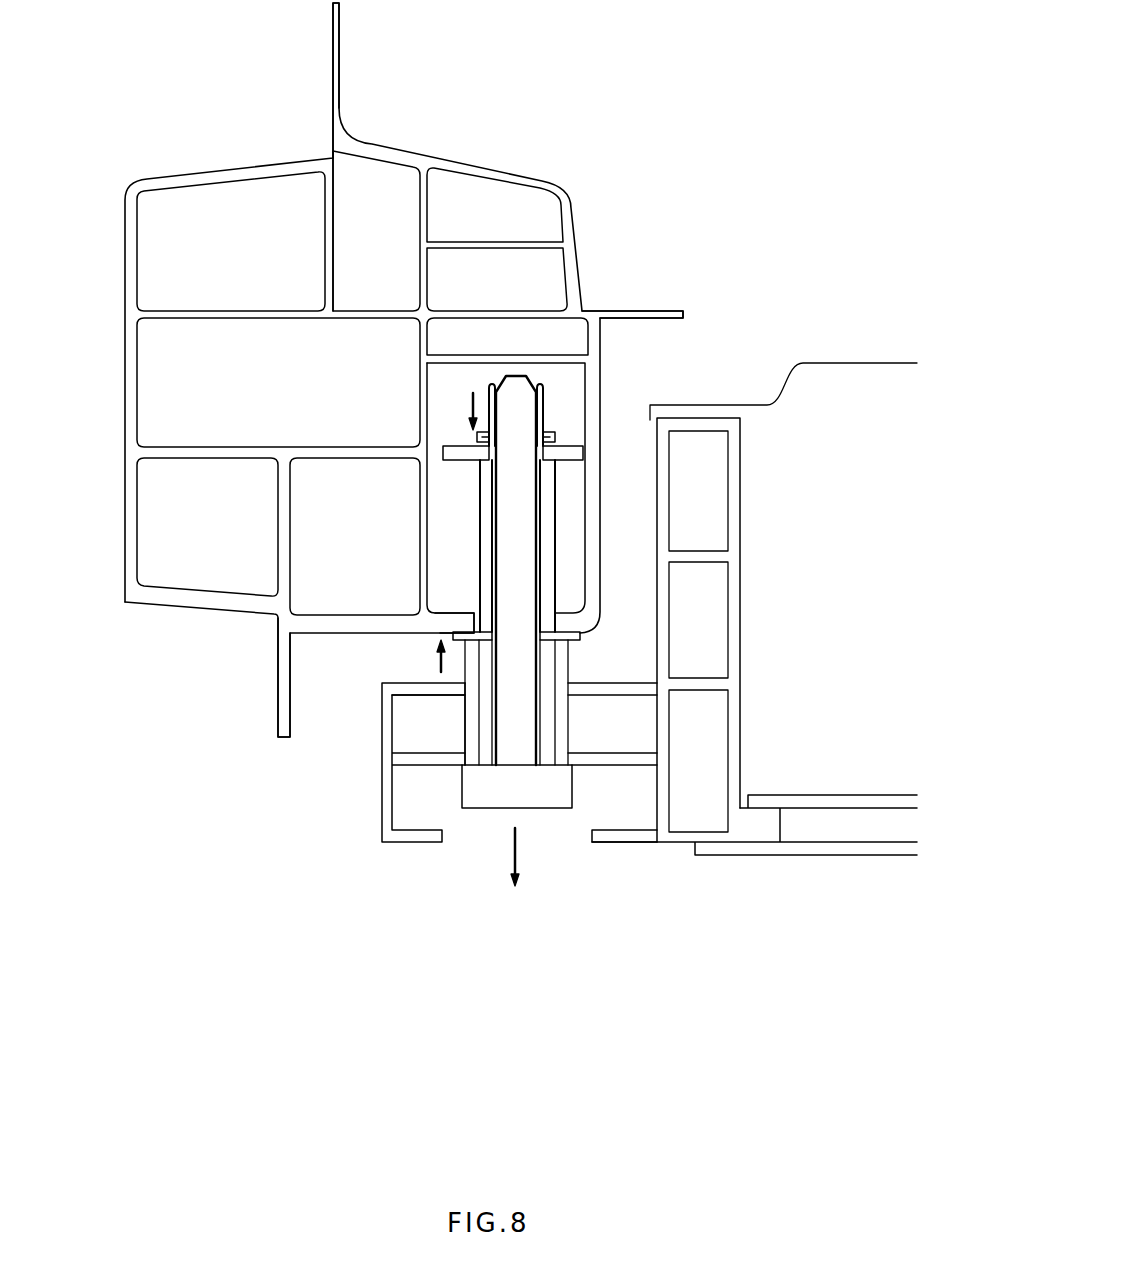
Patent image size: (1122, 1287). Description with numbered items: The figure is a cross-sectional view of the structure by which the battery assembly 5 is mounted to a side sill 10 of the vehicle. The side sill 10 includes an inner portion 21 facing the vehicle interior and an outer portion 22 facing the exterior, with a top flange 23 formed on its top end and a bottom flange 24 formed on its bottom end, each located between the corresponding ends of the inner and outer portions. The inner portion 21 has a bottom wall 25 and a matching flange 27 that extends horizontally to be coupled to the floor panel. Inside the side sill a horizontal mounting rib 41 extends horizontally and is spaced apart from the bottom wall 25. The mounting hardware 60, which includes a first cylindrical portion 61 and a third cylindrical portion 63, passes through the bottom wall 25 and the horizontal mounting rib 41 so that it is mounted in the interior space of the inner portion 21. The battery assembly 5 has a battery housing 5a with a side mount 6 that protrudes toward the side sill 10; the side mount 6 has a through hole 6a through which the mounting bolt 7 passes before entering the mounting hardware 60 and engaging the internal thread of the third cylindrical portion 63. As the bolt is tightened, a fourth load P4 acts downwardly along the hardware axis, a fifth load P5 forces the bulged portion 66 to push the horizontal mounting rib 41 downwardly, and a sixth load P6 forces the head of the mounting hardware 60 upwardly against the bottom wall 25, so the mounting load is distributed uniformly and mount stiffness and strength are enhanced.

The side sill 10 is at (105, 245).
The inner portion 21 is at (596, 244).
The outer portion 22 is at (105, 383).
The top flange 23 is at (340, 56).
The bottom flange 24 is at (276, 681).
The bottom wall 25 is at (464, 623).
The matching flange 27 is at (665, 310).
The horizontal mounting rib 41 is at (458, 455).
The mounting hardware 60 is at (460, 552).
The first cylindrical portion 61 is at (556, 537).
The third cylindrical portion 63 is at (545, 406).
The bulged portion 66 is at (560, 440).
The side mount 6 is at (380, 800).
The through hole 6a is at (478, 728).
The mounting bolt 7 is at (497, 800).
The battery assembly 5 is at (770, 878).
The battery housing 5a is at (752, 830).
The fourth load P4 is at (534, 857).
The fifth load P5 is at (457, 410).
The sixth load P6 is at (425, 657).